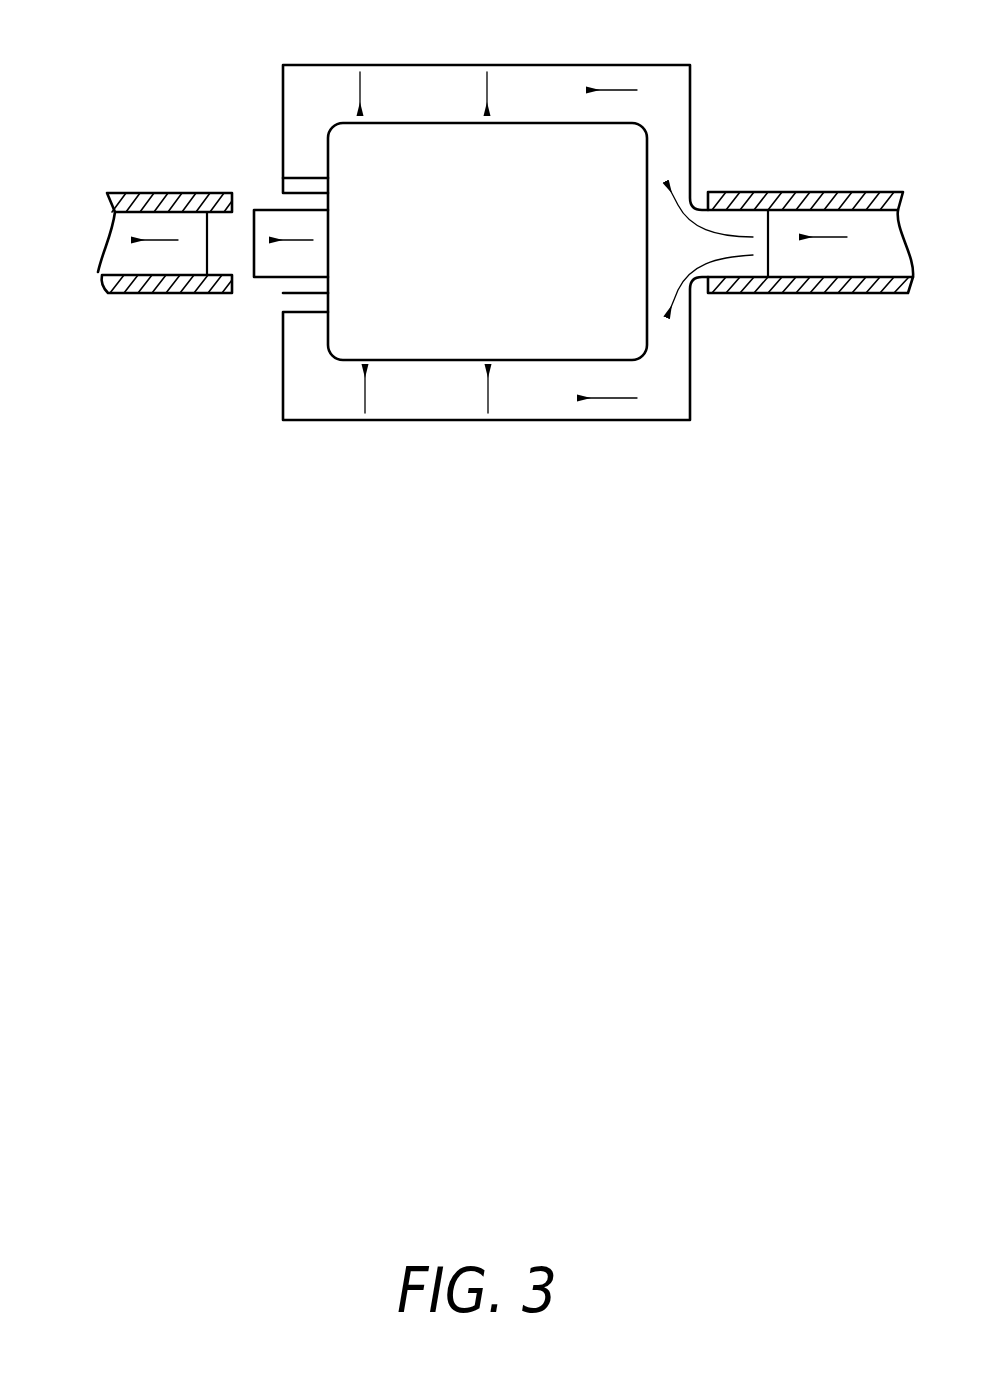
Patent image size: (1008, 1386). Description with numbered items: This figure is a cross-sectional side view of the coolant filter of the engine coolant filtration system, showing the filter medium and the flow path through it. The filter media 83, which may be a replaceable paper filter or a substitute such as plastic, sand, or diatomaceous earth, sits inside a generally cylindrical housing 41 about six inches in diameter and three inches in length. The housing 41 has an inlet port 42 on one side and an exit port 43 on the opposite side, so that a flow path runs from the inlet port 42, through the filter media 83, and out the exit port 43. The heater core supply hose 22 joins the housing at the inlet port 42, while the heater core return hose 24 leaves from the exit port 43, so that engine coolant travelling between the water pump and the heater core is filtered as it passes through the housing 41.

The housing 41 is at (561, 68).
The inlet port 42 is at (722, 222).
The exit port 43 is at (262, 223).
The heater core supply hose 22 is at (805, 200).
The heater core return hose 24 is at (188, 223).
The filter media 83 is at (496, 333).